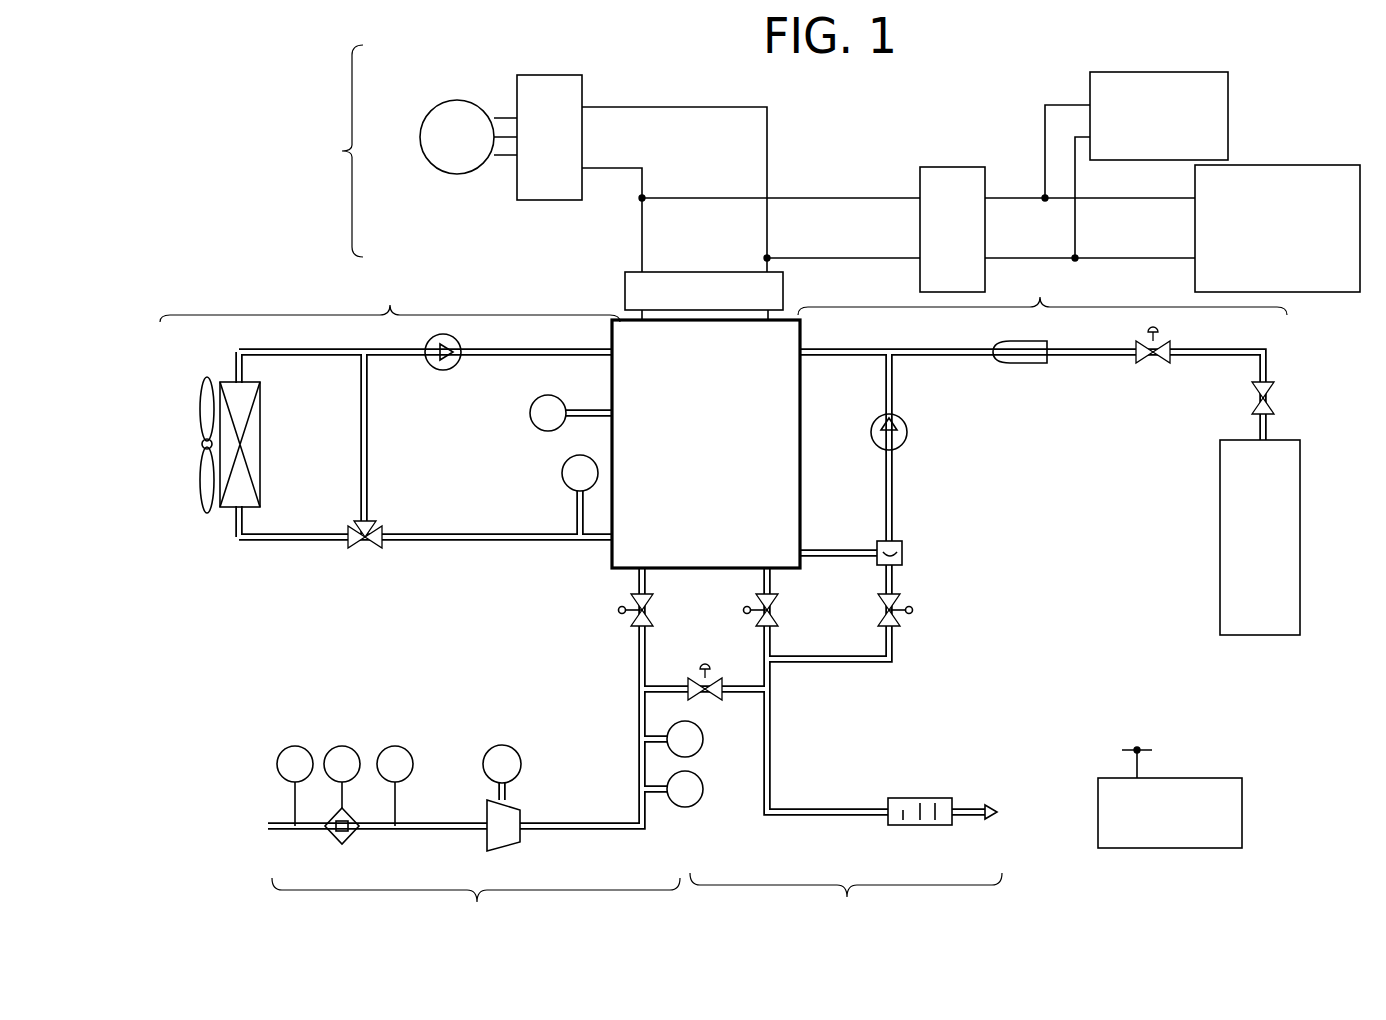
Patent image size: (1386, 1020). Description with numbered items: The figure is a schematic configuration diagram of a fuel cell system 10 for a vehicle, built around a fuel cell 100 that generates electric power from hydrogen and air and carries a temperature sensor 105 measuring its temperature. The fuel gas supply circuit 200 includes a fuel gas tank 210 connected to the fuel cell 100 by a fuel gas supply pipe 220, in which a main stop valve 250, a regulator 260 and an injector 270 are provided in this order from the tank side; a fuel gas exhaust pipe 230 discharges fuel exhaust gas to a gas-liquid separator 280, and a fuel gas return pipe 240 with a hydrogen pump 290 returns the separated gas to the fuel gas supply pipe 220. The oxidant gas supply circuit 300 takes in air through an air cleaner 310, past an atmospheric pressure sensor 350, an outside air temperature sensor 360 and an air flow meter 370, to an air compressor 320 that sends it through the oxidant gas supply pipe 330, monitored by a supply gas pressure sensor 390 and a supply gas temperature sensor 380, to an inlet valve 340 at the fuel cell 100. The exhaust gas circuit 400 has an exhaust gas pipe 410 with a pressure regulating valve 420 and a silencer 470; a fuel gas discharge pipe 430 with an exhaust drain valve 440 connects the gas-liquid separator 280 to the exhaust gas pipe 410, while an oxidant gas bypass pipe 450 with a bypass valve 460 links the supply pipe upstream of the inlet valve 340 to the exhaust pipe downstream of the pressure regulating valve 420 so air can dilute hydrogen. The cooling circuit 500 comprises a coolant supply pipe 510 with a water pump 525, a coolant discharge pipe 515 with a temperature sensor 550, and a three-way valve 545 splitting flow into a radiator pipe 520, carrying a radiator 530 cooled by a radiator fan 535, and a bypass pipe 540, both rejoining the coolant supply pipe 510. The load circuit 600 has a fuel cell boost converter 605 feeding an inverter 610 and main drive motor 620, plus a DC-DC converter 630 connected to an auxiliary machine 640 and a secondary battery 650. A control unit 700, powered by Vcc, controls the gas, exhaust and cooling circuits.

The fuel cell system 10 is at (1264, 103).
The fuel cell 100 is at (614, 320).
The temperature sensor 105 is at (548, 395).
The fuel gas supply circuit 200 is at (1042, 289).
The fuel gas tank 210 is at (1302, 462).
The fuel gas supply pipe 220 is at (1095, 358).
The fuel gas exhaust pipe 230 is at (838, 550).
The fuel gas return pipe 240 is at (895, 387).
The main stop valve 250 is at (1274, 400).
The regulator 260 is at (1158, 364).
The injector 270 is at (1030, 364).
The gas-liquid separator 280 is at (903, 555).
The hydrogen pump 290 is at (909, 436).
The oxidant gas supply circuit 300 is at (476, 908).
The air cleaner 310 is at (327, 833).
The air compressor 320 is at (485, 840).
The oxidant gas supply pipe 330 is at (647, 805).
The inlet valve 340 is at (630, 610).
The atmospheric pressure sensor 350 is at (288, 747).
The outside air temperature sensor 360 is at (338, 745).
The air flow meter 370 is at (393, 745).
The supply gas temperature sensor 380 is at (705, 790).
The supply gas pressure sensor 390 is at (705, 740).
The exhaust gas circuit 400 is at (846, 904).
The exhaust gas pipe 410 is at (820, 812).
The pressure regulating valve 420 is at (778, 606).
The fuel gas discharge pipe 430 is at (875, 662).
The exhaust drain valve 440 is at (913, 604).
The oxidant gas bypass pipe 450 is at (668, 687).
The bypass valve 460 is at (703, 676).
The silencer 470 is at (940, 798).
The cooling circuit 500 is at (390, 296).
The coolant supply pipe 510 is at (520, 357).
The coolant discharge pipe 515 is at (455, 535).
The radiator pipe 520 is at (245, 527).
The water pump 525 is at (443, 372).
The radiator 530 is at (262, 428).
The radiator fan 535 is at (200, 412).
The bypass pipe 540 is at (360, 378).
The three-way valve 545 is at (362, 549).
The temperature sensor 550 is at (562, 473).
The load circuit 600 is at (322, 151).
The fuel cell boost converter 605 is at (658, 272).
The inverter 610 is at (562, 75).
The main drive motor 620 is at (435, 108).
The DC-DC converter 630 is at (965, 167).
The auxiliary machine 640 is at (1158, 72).
The secondary battery 650 is at (1278, 165).
The control unit 700 is at (1207, 778).